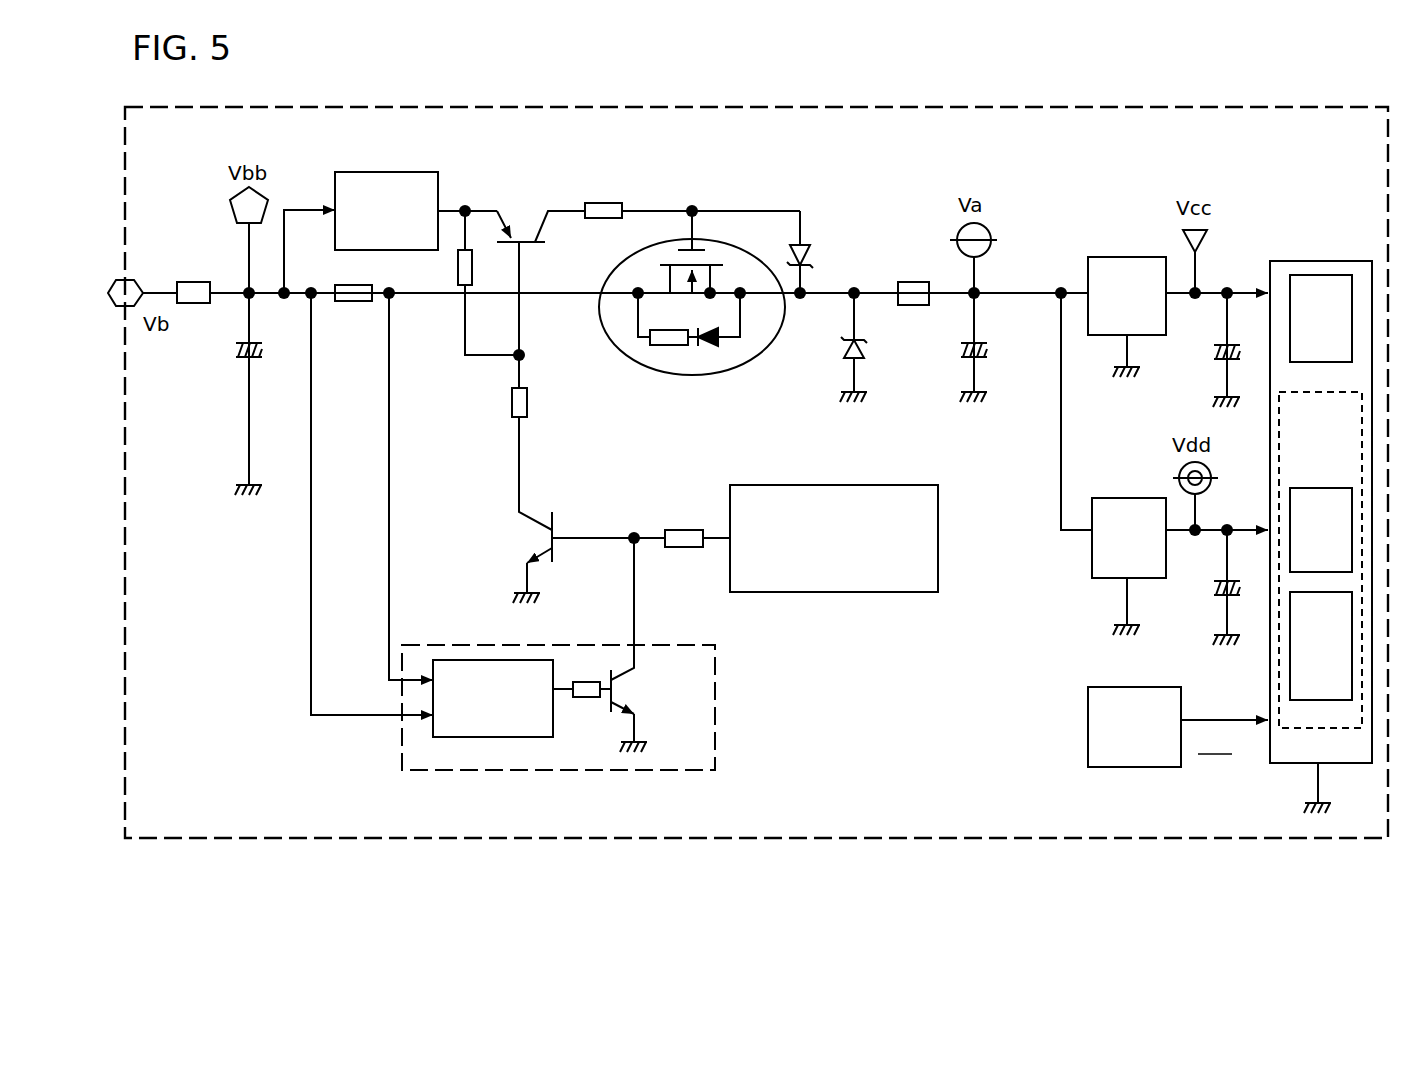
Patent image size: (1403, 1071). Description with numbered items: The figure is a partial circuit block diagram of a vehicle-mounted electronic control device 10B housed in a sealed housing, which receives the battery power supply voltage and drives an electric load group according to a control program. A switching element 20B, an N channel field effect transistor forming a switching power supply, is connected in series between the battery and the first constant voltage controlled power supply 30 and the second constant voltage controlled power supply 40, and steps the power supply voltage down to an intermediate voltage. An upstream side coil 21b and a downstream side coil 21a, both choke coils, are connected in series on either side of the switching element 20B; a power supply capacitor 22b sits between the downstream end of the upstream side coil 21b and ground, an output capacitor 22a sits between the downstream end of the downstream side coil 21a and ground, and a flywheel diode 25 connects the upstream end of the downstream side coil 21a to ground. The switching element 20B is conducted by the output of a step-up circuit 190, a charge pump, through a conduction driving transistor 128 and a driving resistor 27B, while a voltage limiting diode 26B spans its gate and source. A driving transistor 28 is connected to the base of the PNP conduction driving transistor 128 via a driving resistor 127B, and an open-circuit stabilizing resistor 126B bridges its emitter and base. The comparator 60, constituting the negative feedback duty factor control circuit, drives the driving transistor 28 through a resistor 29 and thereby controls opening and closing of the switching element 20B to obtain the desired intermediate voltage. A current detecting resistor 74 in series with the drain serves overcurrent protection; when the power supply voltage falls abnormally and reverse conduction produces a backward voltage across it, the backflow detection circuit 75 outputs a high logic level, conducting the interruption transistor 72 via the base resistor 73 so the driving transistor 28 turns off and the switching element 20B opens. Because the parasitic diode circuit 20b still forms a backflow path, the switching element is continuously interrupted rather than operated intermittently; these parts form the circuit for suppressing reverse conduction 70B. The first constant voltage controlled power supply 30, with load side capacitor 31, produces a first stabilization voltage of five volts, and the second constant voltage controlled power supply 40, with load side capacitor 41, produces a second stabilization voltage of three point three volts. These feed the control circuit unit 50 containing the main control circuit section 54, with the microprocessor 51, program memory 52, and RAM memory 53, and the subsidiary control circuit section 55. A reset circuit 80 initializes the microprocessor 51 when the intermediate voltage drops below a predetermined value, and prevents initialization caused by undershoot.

The vehicle-mounted electronic control device 10B is at (995, 89).
The step-up circuit 190 is at (412, 172).
The conduction driving transistor 128 is at (508, 226).
The driving resistor 27B is at (612, 203).
The switching element 20B is at (740, 246).
The parasitic diode circuit 20b is at (723, 348).
The voltage limiting diode 26B is at (817, 258).
The flywheel diode 25 is at (866, 350).
The downstream side coil 21a is at (912, 282).
The upstream side coil 21b is at (193, 282).
The output capacitor 22a is at (990, 352).
The power supply capacitor 22b is at (236, 345).
The first constant voltage controlled power supply 30 is at (1115, 257).
The load side capacitor 31 is at (1213, 352).
The second constant voltage controlled power supply 40 is at (1115, 498).
The load side capacitor 41 is at (1213, 588).
The control circuit unit 50 is at (1321, 511).
The subsidiary control circuit section 55 is at (1321, 318).
The main control circuit section 54 is at (1320, 560).
The microprocessor 51 is at (1321, 530).
The program memory 52 is at (1321, 646).
The RAM memory 53 is at (1321, 646).
The comparator 60 is at (938, 538).
The circuit for suppressing reverse conduction 70B is at (555, 531).
The backflow detection circuit 75 is at (465, 660).
The interruption transistor 72 is at (623, 688).
The base resistor 73 is at (587, 697).
The current detecting resistor 74 is at (350, 301).
The open-circuit stabilizing resistor 126B is at (455, 268).
The driving resistor 127B is at (527, 402).
The driving transistor 28 is at (540, 503).
The resistor 29 is at (683, 530).
The reset circuit 80 is at (1135, 767).